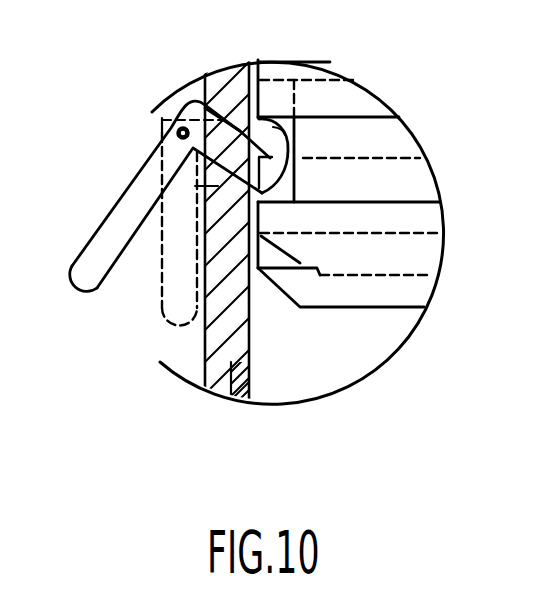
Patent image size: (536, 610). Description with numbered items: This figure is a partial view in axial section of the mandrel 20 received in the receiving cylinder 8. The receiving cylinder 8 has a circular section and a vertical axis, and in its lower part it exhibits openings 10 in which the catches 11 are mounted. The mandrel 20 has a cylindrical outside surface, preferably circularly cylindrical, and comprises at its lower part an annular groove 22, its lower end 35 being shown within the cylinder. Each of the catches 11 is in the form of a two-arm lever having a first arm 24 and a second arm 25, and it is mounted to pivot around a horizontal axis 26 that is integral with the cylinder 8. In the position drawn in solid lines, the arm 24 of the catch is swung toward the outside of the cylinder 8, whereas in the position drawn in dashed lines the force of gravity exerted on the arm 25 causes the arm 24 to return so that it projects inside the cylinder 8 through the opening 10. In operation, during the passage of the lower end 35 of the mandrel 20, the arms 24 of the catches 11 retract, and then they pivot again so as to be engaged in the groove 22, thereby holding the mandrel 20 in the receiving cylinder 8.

The receiving cylinder 8 is at (242, 378).
The openings 10 is at (196, 188).
The catches 11 is at (150, 164).
The mandrel 20 is at (352, 102).
The annular groove 22 is at (387, 148).
The arm 24 is at (228, 135).
The arm 25 is at (110, 238).
The horizontal axis 26 is at (170, 130).
The lower end 35 is at (410, 288).